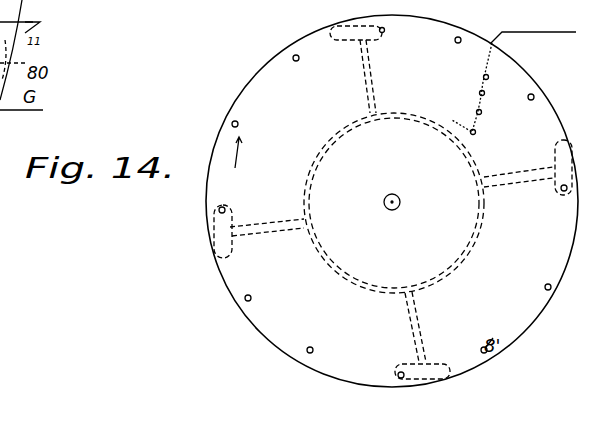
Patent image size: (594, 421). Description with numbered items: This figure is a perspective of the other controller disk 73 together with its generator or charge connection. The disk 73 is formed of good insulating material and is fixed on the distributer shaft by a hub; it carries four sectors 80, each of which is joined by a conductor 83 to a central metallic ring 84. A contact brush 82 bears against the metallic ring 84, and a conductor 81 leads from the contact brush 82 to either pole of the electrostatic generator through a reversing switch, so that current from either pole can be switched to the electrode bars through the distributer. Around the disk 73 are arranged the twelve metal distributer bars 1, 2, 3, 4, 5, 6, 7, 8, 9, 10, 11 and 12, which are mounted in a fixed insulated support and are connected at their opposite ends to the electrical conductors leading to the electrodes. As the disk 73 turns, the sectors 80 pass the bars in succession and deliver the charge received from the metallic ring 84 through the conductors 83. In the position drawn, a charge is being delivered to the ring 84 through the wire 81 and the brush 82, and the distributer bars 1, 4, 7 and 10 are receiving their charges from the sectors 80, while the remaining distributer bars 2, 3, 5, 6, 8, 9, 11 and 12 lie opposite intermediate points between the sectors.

The controller disk 73 is at (392, 201).
The metallic ring 84 is at (478, 228).
The sector 80 is at (344, 42).
The conductor 83 is at (378, 76).
The contact brush 82 is at (454, 118).
The conductor 81 is at (547, 32).
The distributer bar 8 is at (566, 180).
The distributer bar 1 is at (238, 124).
The distributer bar 2 is at (295, 61).
The distributer bar 3 is at (382, 33).
The distributer bar 4 is at (457, 43).
The distributer bar 5 is at (529, 100).
The distributer bar 6 is at (562, 191).
The distributer bar 7 is at (550, 290).
The distributer bar 9 is at (400, 372).
The distributer bar 10 is at (313, 350).
The distributer bar 11 is at (251, 298).
The distributer bar 12 is at (225, 208).